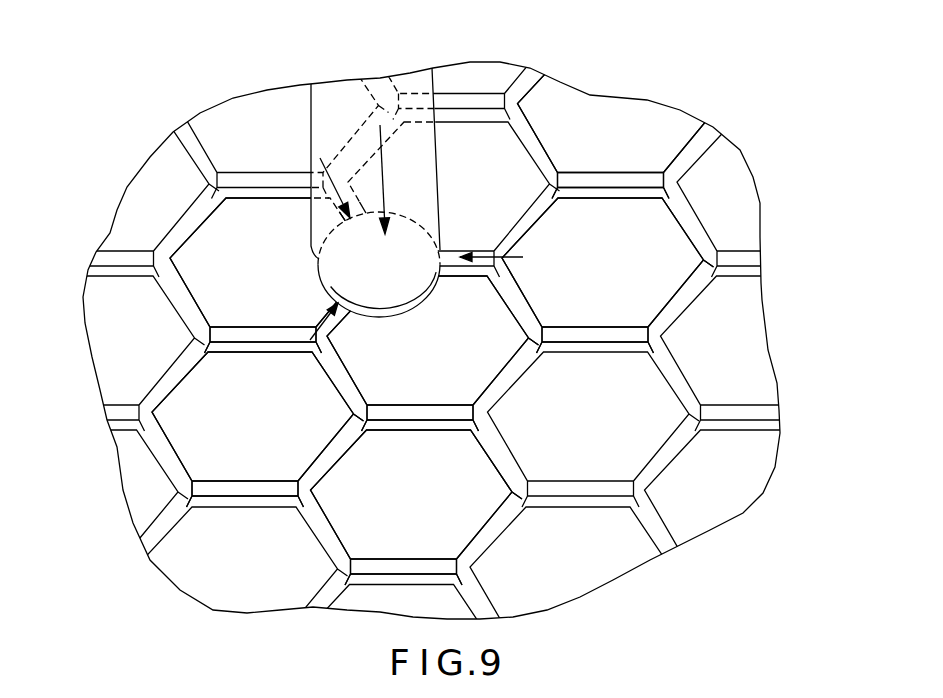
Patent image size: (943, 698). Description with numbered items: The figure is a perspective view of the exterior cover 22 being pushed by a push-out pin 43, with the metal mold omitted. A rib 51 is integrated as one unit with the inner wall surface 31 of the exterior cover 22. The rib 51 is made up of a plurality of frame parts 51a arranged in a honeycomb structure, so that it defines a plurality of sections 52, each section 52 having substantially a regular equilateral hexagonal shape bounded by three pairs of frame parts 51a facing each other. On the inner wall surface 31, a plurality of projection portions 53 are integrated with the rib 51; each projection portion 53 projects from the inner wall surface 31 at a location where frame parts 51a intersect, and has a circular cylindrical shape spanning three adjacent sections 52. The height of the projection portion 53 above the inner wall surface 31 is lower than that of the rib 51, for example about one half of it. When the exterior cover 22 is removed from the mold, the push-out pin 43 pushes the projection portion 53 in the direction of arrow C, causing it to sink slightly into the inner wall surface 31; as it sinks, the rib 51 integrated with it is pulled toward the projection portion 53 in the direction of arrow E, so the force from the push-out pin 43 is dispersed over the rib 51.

The exterior cover 22 is at (157, 109).
The inner wall surface 31 is at (653, 110).
The push-out pin 43 is at (332, 80).
The rib 51 is at (708, 224).
The frame part 51a is at (323, 302).
The section 52 is at (513, 150).
The projection portion 53 is at (388, 293).
The arrow C is at (388, 180).
The arrow E is at (330, 207).